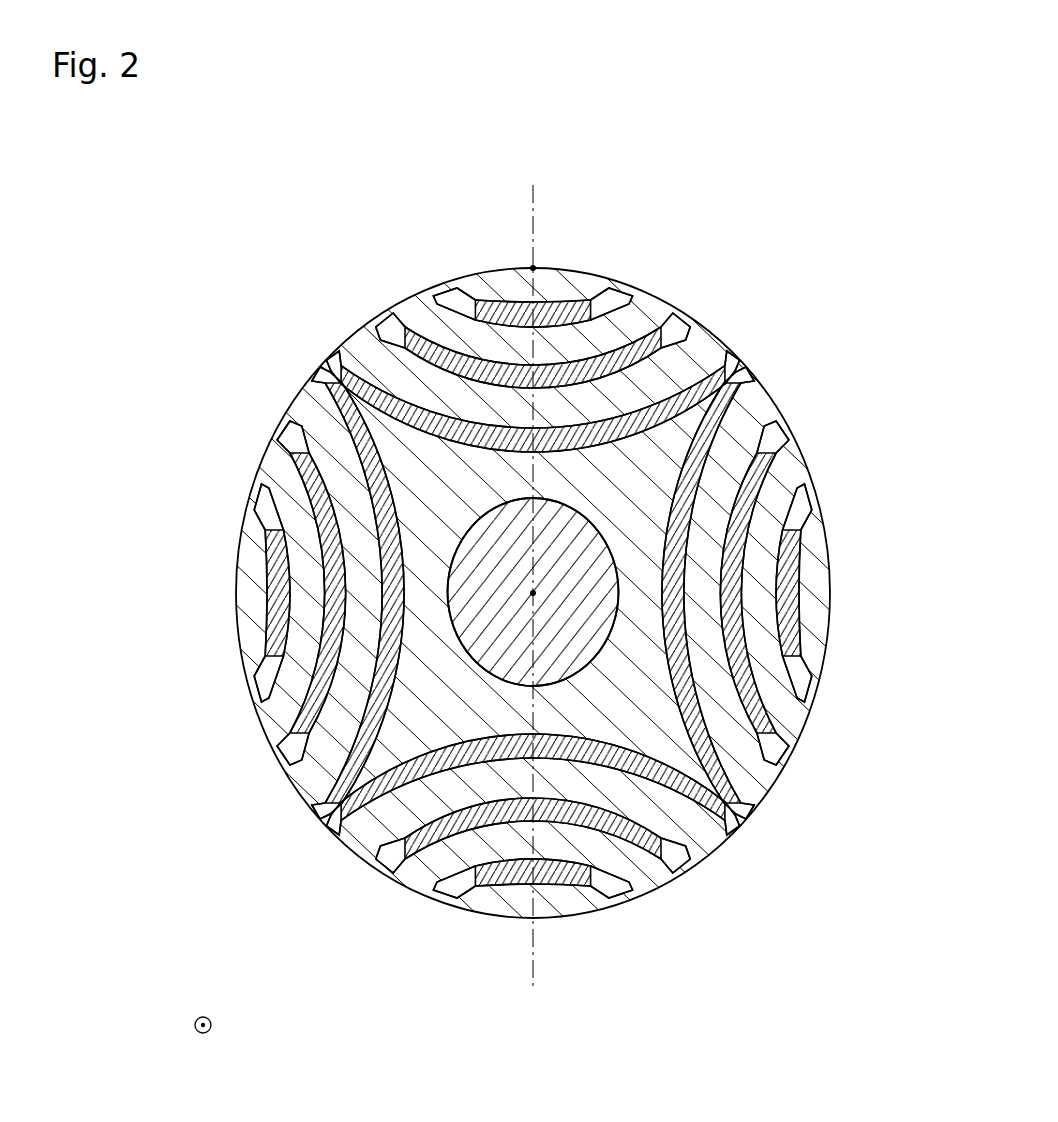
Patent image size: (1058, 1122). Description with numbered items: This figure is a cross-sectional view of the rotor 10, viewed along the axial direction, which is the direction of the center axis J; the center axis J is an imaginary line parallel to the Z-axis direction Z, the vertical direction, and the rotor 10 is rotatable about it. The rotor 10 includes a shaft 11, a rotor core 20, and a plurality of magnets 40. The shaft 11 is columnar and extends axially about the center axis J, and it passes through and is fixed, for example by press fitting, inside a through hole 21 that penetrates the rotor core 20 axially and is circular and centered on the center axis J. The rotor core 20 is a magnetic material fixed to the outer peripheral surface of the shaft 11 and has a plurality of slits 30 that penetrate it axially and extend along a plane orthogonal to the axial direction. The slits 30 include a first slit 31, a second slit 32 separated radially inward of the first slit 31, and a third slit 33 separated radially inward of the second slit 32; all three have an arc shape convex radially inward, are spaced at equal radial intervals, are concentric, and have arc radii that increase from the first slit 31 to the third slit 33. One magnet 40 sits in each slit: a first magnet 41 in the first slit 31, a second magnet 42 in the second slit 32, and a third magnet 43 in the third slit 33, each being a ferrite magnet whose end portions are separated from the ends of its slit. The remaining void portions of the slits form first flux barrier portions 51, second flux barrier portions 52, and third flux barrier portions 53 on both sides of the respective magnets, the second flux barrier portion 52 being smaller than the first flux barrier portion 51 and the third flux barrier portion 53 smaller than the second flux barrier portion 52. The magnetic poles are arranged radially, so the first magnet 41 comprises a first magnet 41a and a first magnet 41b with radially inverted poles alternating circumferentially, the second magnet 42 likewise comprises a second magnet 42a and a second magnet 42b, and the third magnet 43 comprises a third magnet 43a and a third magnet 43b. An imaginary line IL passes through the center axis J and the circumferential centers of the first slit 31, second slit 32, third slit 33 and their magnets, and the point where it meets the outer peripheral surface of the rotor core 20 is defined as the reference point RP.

The rotor 10 is at (537, 555).
The shaft 11 is at (482, 636).
The rotor core 20 is at (772, 797).
The through hole 21 is at (582, 642).
The slits 30 is at (565, 565).
The first slit 31 is at (622, 292).
The second slit 32 is at (683, 320).
The third slit 33 is at (589, 583).
The magnets 40 is at (537, 555).
The first magnet 41 is at (534, 533).
The first magnet 41a is at (531, 298).
The first magnet 41b is at (272, 560).
The second magnet 42 is at (550, 573).
The second magnet 42a is at (590, 354).
The second magnet 42b is at (300, 462).
The third magnet 43 is at (557, 545).
The third magnet 43a is at (354, 388).
The third magnet 43b is at (368, 368).
The first flux barrier portion 51 is at (447, 283).
The second flux barrier portion 52 is at (390, 308).
The third flux barrier portion 53 is at (337, 346).
The imaginary line IL is at (541, 213).
The reference point RP is at (537, 265).
The center axis J is at (531, 598).
The Z-axis direction Z is at (216, 1037).